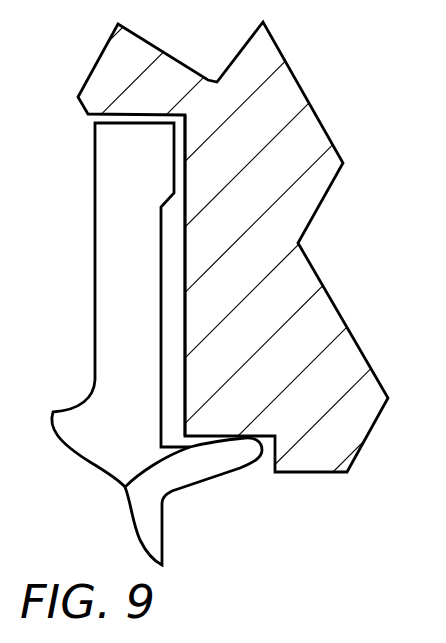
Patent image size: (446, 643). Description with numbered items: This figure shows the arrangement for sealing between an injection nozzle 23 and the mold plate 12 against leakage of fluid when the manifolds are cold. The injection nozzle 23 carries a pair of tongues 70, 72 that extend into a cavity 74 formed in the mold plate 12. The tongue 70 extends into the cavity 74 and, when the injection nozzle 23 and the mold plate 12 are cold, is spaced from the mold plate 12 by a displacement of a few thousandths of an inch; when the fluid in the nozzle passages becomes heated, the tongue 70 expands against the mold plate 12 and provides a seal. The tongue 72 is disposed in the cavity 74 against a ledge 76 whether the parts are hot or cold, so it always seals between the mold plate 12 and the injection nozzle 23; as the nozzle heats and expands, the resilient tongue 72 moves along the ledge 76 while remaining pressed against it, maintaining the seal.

The mold plate 12 is at (293, 90).
The tongue 70 is at (102, 265).
The cavity 74 is at (184, 334).
The ledge 76 is at (182, 466).
The tongue 72 is at (220, 470).
The injection nozzle 23 is at (153, 535).